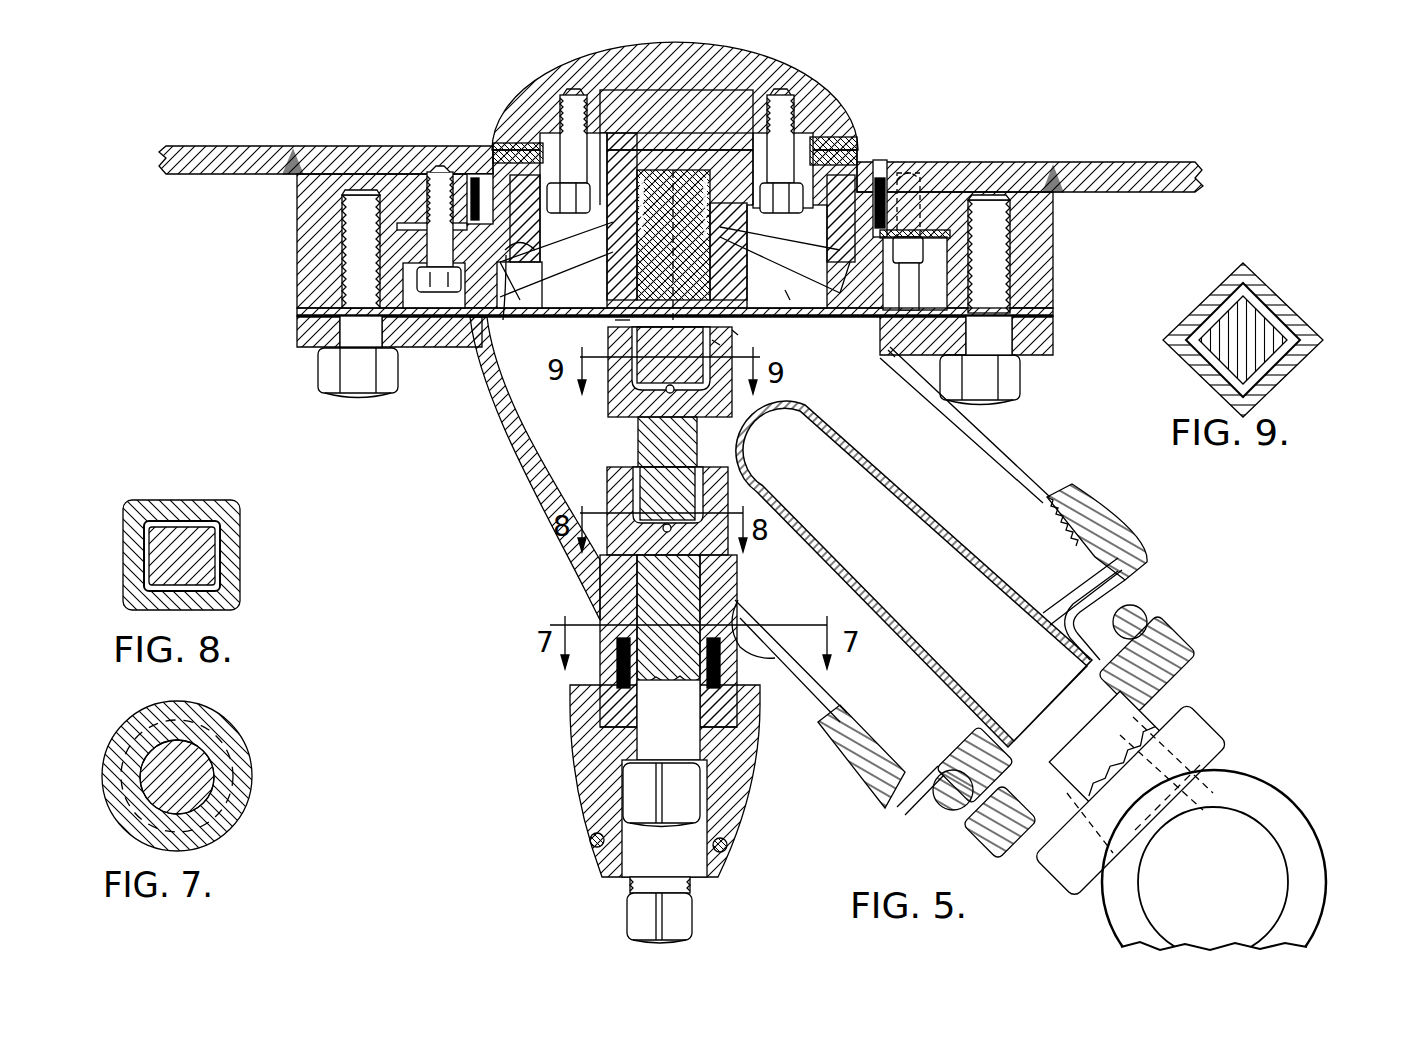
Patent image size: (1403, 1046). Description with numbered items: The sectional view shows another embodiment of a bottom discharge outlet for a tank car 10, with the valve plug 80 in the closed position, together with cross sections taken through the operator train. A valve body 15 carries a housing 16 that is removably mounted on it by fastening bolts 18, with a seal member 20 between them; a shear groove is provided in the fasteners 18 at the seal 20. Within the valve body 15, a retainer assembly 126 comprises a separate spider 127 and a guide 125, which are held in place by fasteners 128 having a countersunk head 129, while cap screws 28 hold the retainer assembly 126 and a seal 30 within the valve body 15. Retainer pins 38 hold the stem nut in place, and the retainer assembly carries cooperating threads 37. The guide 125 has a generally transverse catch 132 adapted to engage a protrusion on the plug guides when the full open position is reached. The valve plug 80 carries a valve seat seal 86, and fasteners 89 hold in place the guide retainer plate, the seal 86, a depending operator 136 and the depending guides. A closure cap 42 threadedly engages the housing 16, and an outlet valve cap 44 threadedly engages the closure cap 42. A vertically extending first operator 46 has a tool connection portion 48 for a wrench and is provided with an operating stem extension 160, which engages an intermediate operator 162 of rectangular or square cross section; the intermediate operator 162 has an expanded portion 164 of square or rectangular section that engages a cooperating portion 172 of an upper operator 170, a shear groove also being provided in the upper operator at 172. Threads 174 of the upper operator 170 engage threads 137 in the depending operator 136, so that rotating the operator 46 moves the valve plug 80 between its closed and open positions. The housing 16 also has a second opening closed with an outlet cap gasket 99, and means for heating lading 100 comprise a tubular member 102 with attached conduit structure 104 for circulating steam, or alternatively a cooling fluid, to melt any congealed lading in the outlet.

In FIG. 5, the tank car 10 is at (1150, 161).
In FIG. 5, the valve body 15 is at (1030, 249).
In FIG. 5, the housing 16 is at (505, 483).
In FIG. 7, the housing 16 is at (224, 728).
In FIG. 5, the fastening bolts 18 is at (328, 378).
In FIG. 5, the seal member 20 is at (302, 313).
In FIG. 5, the fastening bolts 28 is at (438, 170).
In FIG. 5, the seal member 30 is at (882, 175).
In FIG. 5, the cooperating threads 37 is at (497, 150).
In FIG. 5, the retainer pins 38 is at (622, 280).
In FIG. 5, the closure cap 42 is at (590, 782).
In FIG. 5, the outlet valve cap 44 is at (684, 913).
In FIG. 5, the first operator 46 is at (643, 614).
In FIG. 7, the first operator 46 is at (200, 772).
In FIG. 5, the tool connection portion 48 is at (688, 802).
In FIG. 5, the valve plug 80 is at (812, 70).
In FIG. 5, the valve seat seal 86 is at (845, 122).
In FIG. 5, the fasteners 89 is at (780, 112).
In FIG. 5, the outlet cap gasket 99 is at (1140, 553).
In FIG. 5, the means for heating lading 100 is at (1180, 581).
In FIG. 5, the tubular member 102 is at (907, 497).
In FIG. 5, the conduit structure 104 is at (1230, 796).
In FIG. 5, the guide 125 is at (490, 178).
In FIG. 5, the retainer assembly 126 is at (790, 292).
In FIG. 5, the spider 127 is at (503, 320).
In FIG. 5, the fasteners 128 is at (915, 205).
In FIG. 5, the countersunk head 129 is at (890, 352).
In FIG. 5, the transverse catch 132 is at (612, 222).
In FIG. 5, the depending operator 136 is at (617, 321).
In FIG. 5, the threads 137 is at (740, 212).
In FIG. 5, the operating stem extension 160 is at (622, 497).
In FIG. 8, the operating stem extension 160 is at (228, 533).
In FIG. 5, the intermediate operator 162 is at (668, 443).
In FIG. 9, the intermediate operator 162 is at (1270, 349).
In FIG. 8, the intermediate operator 162 is at (202, 574).
In FIG. 5, the expanded portion 164 is at (612, 400).
In FIG. 9, the expanded portion 164 is at (1254, 282).
In FIG. 5, the upper operator 170 is at (742, 332).
In FIG. 9, the upper operator 170 is at (1305, 318).
In FIG. 5, the cooperating portion 172 is at (724, 344).
In FIG. 5, the threads 174 is at (673, 245).